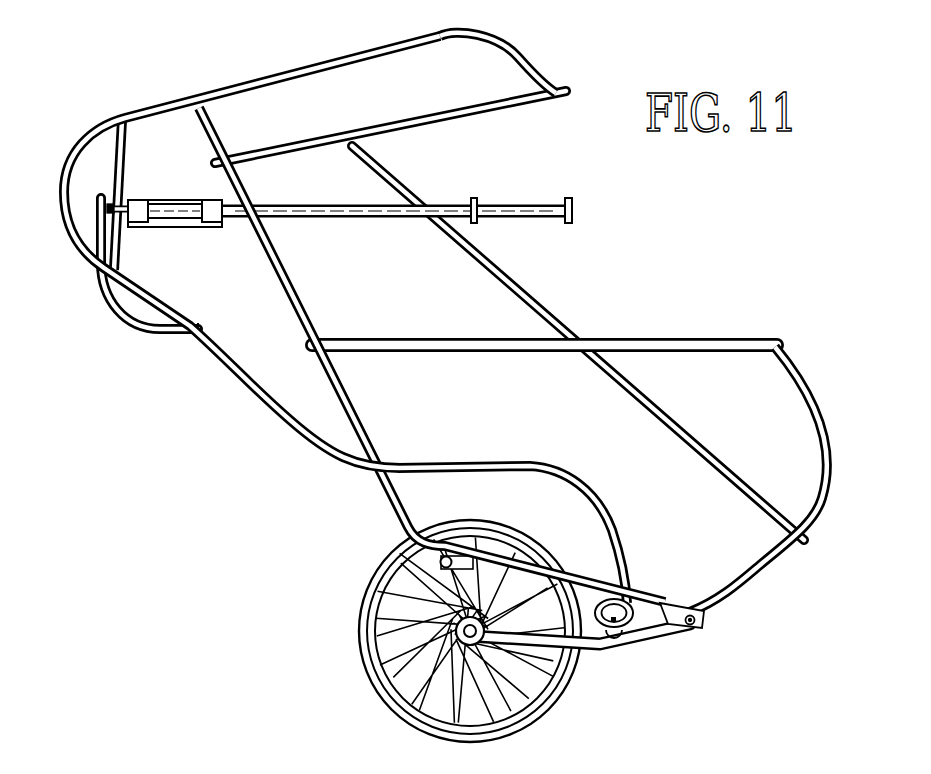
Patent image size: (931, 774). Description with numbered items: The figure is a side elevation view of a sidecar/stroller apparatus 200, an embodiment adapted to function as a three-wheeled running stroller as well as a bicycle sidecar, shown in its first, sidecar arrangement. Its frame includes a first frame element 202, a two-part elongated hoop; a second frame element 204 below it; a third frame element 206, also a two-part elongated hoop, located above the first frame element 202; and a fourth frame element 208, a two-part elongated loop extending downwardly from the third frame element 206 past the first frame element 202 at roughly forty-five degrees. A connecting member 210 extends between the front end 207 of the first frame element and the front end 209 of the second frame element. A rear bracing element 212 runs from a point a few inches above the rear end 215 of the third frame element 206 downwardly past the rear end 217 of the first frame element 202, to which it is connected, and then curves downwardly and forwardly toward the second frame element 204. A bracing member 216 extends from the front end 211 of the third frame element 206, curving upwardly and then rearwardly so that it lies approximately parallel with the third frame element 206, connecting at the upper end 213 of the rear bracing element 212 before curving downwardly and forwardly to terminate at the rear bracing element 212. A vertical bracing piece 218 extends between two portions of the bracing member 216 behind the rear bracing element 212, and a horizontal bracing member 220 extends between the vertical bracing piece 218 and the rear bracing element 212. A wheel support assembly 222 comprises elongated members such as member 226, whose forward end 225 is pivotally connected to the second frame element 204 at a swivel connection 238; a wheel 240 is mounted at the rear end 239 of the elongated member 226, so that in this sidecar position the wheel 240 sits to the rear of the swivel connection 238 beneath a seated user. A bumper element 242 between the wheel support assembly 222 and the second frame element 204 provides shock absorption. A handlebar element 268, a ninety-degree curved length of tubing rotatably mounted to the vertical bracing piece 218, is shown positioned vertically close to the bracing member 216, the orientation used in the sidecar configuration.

The sidecar/stroller apparatus 200 is at (745, 250).
The first frame element 202 is at (734, 341).
The second frame element 204 is at (670, 640).
The third frame element 206 is at (527, 90).
The front end of the first frame element 207 is at (784, 350).
The fourth frame element 208 is at (550, 304).
The front end of the second frame element 209 is at (809, 536).
The connecting member 210 is at (831, 452).
The front end of the third frame element 211 is at (566, 100).
The rear bracing element 212 is at (294, 287).
The upper end of the rear bracing element 213 is at (204, 114).
The rear end of the third frame element 215 is at (216, 158).
The bracing member 216 is at (292, 66).
The rear end of the first frame element 217 is at (318, 338).
The vertical bracing piece 218 is at (124, 170).
The horizontal bracing member 220 is at (233, 226).
The wheel support assembly 222 is at (599, 662).
The forward end of elongated member 225 is at (684, 628).
The elongated member 226 is at (633, 654).
The swivel connection 238 is at (696, 621).
The rear end of elongated member 239 is at (441, 714).
The wheel 240 is at (537, 718).
The bumper element 242 is at (634, 607).
The handlebar element 268 is at (133, 327).